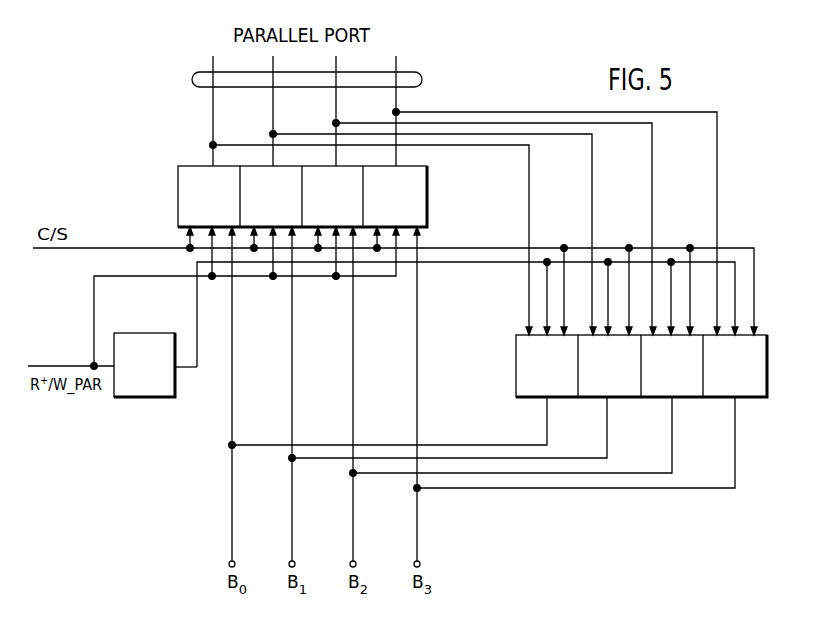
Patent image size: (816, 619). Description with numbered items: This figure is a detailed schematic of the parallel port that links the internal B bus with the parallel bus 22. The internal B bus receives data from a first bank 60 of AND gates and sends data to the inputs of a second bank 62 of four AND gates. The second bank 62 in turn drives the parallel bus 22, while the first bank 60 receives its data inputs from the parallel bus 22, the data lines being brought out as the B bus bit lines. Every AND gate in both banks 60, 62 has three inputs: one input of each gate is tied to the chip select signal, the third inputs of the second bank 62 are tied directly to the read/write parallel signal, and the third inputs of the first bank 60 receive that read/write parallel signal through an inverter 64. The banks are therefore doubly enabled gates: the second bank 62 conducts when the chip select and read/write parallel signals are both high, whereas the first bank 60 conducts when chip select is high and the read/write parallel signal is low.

The parallel bus 22 is at (192, 79).
The second bank of AND gates 62 is at (178, 181).
The first bank of AND gates 60 is at (516, 352).
The inverter 64 is at (170, 400).